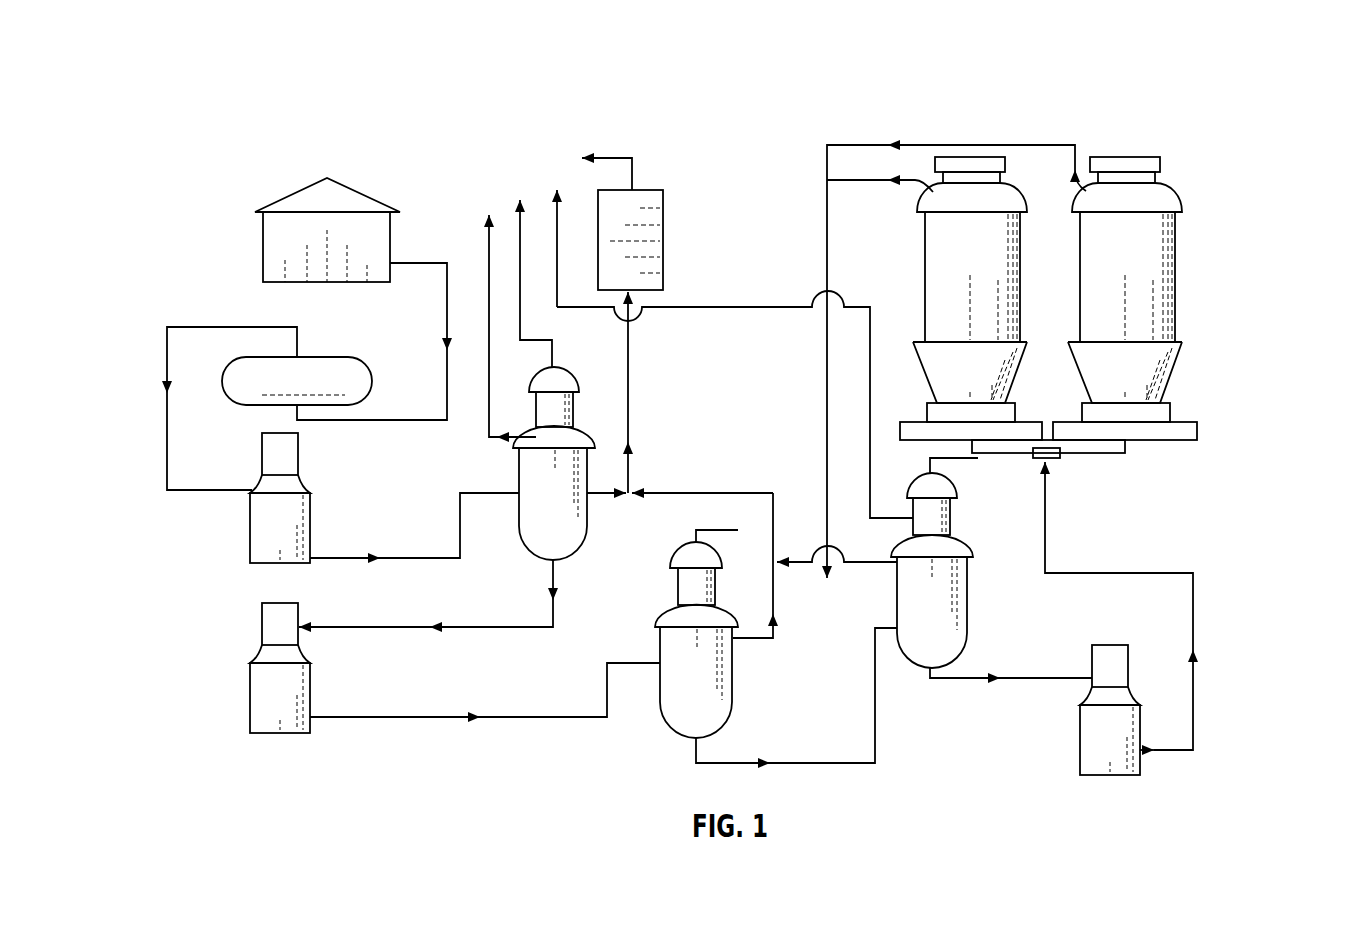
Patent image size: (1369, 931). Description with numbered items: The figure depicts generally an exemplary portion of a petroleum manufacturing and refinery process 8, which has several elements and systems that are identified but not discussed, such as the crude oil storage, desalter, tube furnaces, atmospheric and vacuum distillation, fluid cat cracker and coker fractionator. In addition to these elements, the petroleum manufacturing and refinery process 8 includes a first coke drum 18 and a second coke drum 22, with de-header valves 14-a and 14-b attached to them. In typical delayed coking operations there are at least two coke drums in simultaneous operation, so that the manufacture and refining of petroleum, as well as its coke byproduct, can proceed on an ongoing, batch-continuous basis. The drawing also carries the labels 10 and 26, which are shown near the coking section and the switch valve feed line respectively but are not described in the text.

The petroleum manufacturing and refinery process 8 is at (198, 77).
The delayed coking unit 10 is at (1257, 67).
The de-header valve 14-a is at (1197, 432).
The de-header valve 14-b is at (900, 430).
The first coke drum 18 is at (1005, 197).
The second coke drum 22 is at (1163, 200).
The heated feed line 26 is at (1048, 510).